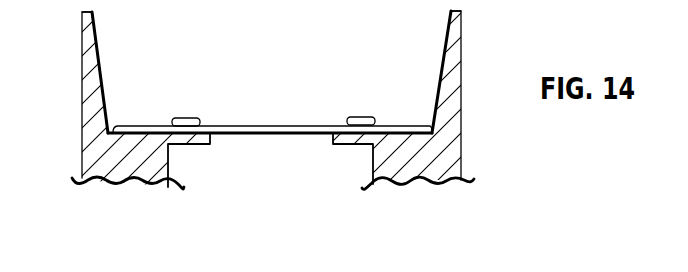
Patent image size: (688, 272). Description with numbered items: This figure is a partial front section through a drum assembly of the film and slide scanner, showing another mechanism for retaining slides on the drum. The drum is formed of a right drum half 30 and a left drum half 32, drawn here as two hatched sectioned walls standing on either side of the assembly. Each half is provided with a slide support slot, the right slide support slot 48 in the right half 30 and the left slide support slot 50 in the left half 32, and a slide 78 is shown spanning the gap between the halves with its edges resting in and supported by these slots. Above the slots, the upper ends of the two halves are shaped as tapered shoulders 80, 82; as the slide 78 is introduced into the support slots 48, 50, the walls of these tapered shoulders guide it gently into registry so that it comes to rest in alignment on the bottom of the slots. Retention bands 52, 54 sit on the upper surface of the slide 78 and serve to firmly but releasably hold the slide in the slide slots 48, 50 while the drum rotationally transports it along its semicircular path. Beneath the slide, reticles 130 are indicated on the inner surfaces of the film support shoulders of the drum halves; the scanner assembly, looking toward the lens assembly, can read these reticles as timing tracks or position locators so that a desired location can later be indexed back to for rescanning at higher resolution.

The right drum half 30 is at (447, 132).
The left drum half 32 is at (89, 121).
The right slide support slot 48 is at (429, 127).
The left slide support slot 50 is at (110, 132).
The film/slide retention band 52 is at (362, 116).
The film/slide retention band 54 is at (185, 117).
The slide 78 is at (290, 122).
The tapered shoulder 80 is at (444, 40).
The tapered shoulder 82 is at (96, 37).
The reticle 130 is at (204, 147).